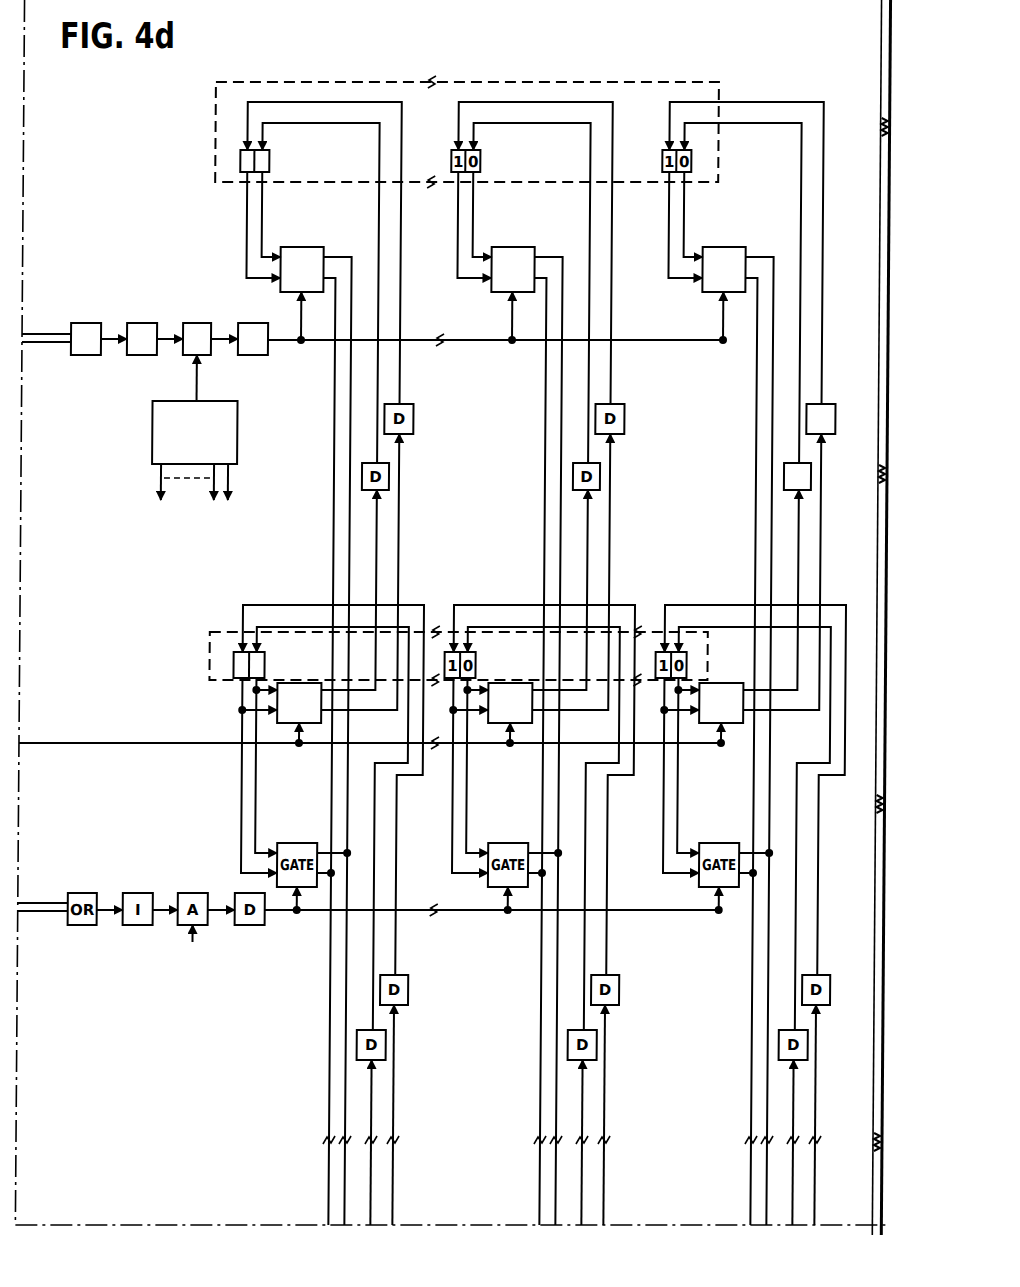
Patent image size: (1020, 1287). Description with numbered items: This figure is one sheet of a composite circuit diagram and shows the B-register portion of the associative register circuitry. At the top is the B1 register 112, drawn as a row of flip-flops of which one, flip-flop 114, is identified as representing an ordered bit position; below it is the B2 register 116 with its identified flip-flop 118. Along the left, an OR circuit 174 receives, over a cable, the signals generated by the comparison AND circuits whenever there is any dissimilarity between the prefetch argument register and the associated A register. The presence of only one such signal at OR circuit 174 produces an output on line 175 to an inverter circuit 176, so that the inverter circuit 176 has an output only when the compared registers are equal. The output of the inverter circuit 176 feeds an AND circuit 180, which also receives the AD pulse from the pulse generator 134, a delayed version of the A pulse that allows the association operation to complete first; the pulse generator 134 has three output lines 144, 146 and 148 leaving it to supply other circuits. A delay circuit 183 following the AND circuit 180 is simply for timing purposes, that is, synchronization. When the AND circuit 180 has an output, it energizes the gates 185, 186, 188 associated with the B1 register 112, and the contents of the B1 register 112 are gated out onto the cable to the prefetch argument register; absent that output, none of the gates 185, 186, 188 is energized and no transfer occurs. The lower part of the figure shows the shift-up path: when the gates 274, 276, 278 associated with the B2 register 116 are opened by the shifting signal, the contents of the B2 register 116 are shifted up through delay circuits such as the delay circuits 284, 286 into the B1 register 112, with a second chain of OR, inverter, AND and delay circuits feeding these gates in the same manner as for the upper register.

The B1 register 112 is at (214, 104).
The flip-flop 114 is at (268, 161).
The B2 register 116 is at (211, 658).
The flip-flop 118 is at (267, 662).
The pulse generator 134 is at (238, 436).
The line 144 is at (160, 489).
The line 146 is at (213, 486).
The line 148 is at (233, 487).
The OR circuit 174 is at (85, 322).
The line 175 is at (106, 335).
The inverter circuit 176 is at (142, 323).
The AND circuit 180 is at (194, 323).
The delay circuit 183 is at (256, 323).
The gate 185 is at (284, 247).
The gate 186 is at (513, 258).
The gate 188 is at (724, 258).
The gate 274 is at (288, 726).
The gate 276 is at (501, 726).
The gate 278 is at (721, 727).
The delay circuit 284 is at (836, 419).
The delay circuit 286 is at (817, 477).